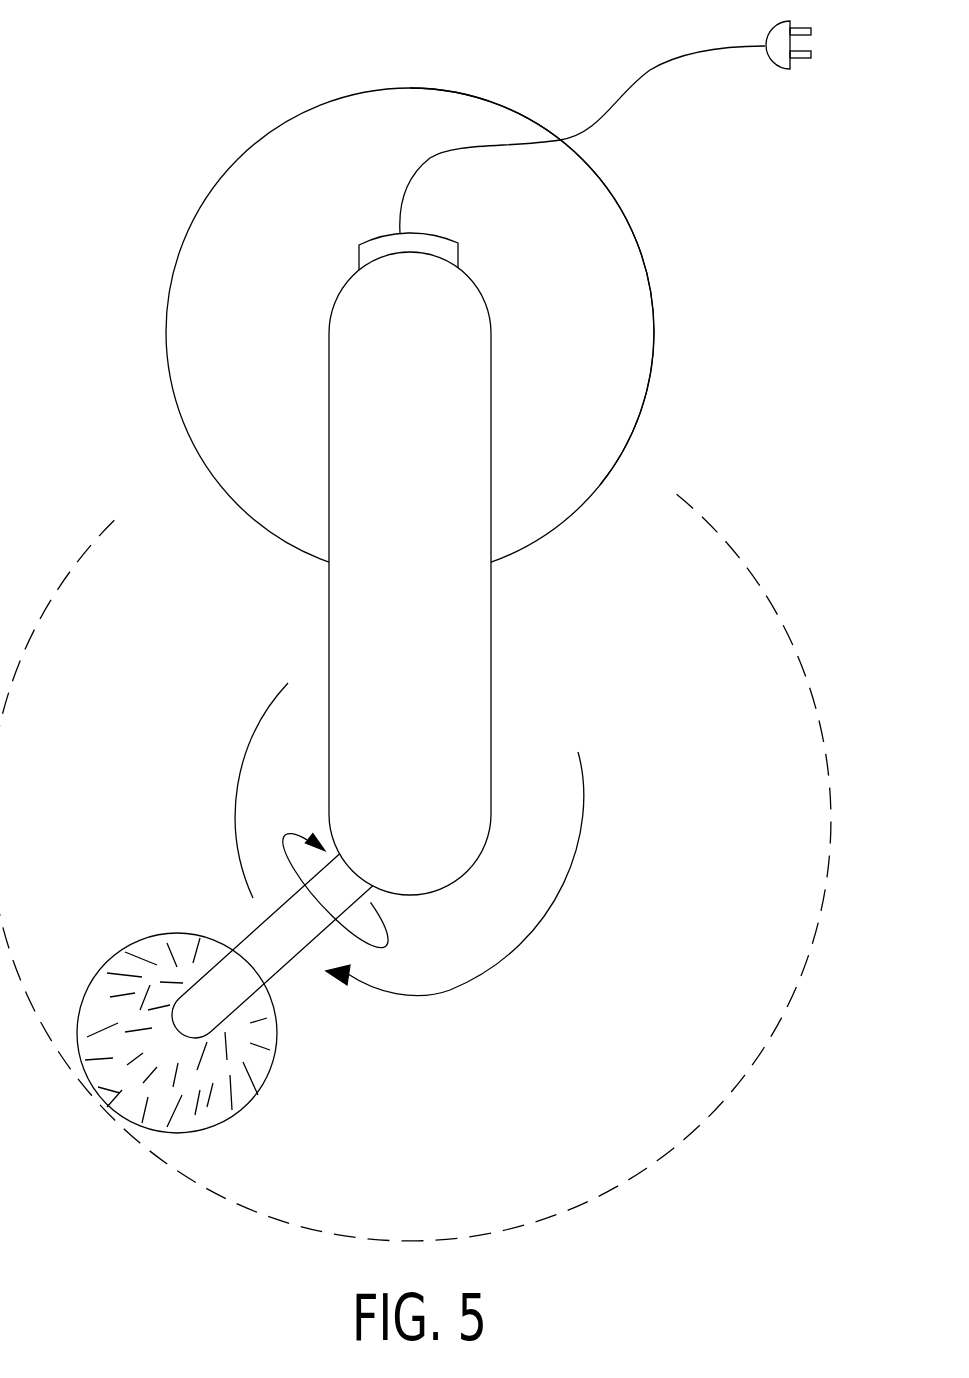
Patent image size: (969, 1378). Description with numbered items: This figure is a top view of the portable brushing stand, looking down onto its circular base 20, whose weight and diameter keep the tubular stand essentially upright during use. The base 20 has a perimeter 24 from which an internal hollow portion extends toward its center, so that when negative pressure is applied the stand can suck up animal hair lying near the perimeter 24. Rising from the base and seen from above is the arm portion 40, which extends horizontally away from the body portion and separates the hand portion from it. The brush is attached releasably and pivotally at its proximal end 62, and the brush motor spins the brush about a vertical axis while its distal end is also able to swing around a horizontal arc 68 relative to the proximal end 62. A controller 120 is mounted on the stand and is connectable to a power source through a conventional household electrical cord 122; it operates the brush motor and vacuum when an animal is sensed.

The base 20 is at (578, 212).
The perimeter 24 is at (652, 342).
The arm portion 40 is at (470, 606).
The proximal end 62 is at (255, 922).
The horizontal arc 68 is at (265, 1222).
The controller 120 is at (378, 245).
The electrical cord 122 is at (642, 60).